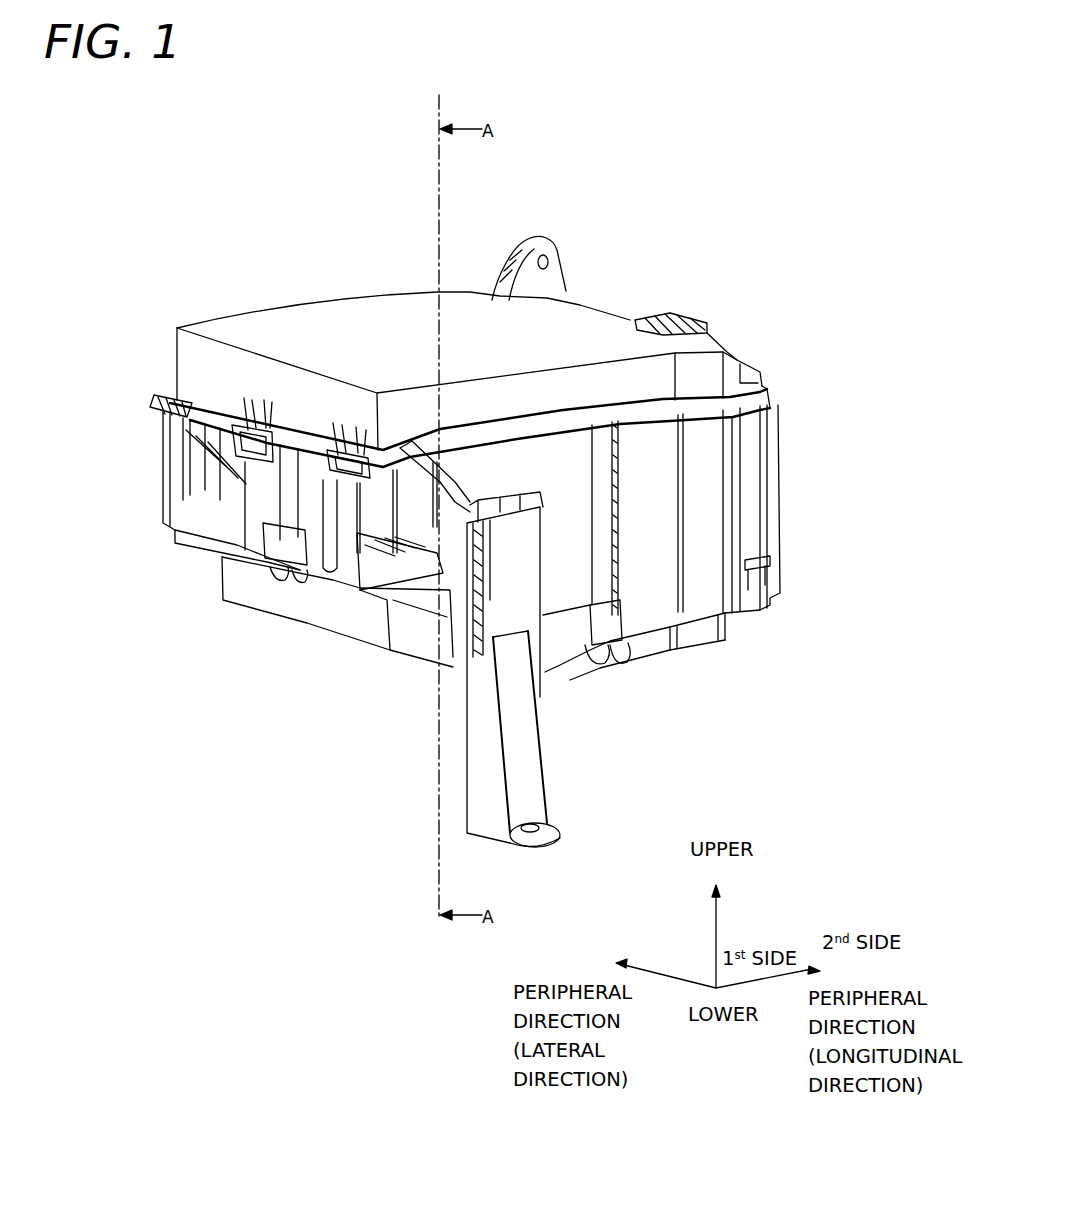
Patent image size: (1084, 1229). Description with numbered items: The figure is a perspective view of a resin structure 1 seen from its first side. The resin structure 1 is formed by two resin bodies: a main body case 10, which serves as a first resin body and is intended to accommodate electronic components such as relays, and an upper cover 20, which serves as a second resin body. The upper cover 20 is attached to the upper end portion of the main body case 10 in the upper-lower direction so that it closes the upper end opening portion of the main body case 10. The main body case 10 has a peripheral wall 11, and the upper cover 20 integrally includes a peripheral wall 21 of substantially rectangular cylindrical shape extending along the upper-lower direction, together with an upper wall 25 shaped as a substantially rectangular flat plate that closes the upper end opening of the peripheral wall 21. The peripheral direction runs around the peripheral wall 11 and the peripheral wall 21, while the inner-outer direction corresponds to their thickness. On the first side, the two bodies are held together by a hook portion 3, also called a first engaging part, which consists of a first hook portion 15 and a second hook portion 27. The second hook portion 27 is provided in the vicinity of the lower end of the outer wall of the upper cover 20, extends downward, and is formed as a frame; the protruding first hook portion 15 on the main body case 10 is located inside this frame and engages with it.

The resin structure 1 is at (80, 343).
The main body case 10 is at (164, 440).
The peripheral wall 11 is at (650, 567).
The upper cover 20 is at (178, 351).
The peripheral wall 21 is at (575, 388).
The upper wall 25 is at (310, 322).
The hook portion 3 is at (361, 718).
The first hook portion 15 is at (337, 462).
The second hook portion 27 is at (378, 490).